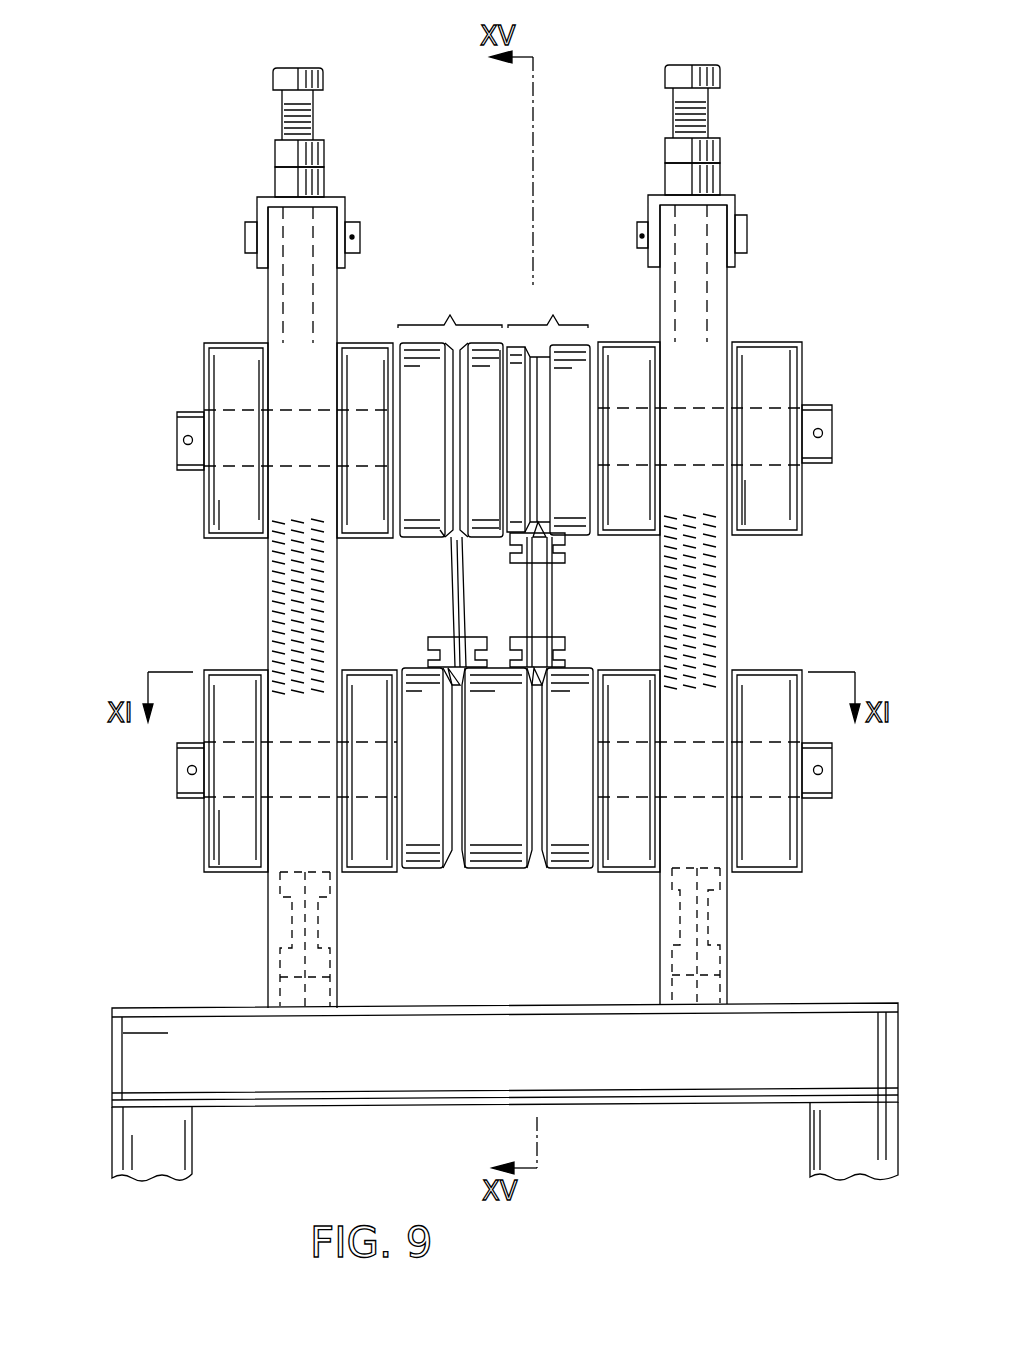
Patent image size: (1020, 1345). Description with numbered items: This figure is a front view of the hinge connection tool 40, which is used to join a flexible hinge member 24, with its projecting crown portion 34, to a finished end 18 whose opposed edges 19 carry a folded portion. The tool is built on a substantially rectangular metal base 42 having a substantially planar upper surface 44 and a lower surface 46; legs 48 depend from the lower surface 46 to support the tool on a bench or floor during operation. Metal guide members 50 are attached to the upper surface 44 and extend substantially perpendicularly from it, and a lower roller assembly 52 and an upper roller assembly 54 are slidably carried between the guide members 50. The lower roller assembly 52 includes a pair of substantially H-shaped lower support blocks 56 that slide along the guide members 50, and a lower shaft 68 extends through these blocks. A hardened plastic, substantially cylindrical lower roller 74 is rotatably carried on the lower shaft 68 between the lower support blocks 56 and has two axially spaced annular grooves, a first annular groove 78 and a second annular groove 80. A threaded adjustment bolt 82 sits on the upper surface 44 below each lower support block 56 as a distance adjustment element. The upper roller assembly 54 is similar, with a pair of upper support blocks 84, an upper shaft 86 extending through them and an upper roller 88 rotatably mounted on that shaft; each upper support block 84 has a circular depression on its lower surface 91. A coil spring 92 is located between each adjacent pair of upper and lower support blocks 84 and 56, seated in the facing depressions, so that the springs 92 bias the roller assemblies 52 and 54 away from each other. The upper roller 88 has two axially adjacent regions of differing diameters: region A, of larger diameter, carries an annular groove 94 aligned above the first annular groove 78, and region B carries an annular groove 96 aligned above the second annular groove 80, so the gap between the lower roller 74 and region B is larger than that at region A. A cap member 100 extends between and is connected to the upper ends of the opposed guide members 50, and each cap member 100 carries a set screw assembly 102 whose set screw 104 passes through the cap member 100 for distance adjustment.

The finished end 18 is at (522, 594).
The opposed edges 19 is at (442, 530).
The flexible hinge member 24 is at (514, 548).
The projecting crown portion 34 is at (544, 522).
The hinge connection tool 40 is at (768, 110).
The base 42 is at (112, 1041).
The upper surface 44 is at (482, 1005).
The lower surface 46 is at (276, 1107).
The legs 48 is at (112, 1134).
The guide members 50 is at (284, 901).
The lower roller assembly 52 is at (182, 812).
The upper roller assembly 54 is at (186, 391).
The lower support blocks 56 is at (210, 850).
The lower shaft 68 is at (832, 772).
The lower roller 74 is at (418, 868).
The first annular groove 78 is at (452, 868).
The second annular groove 80 is at (544, 868).
The threaded adjustment bolt 82 is at (294, 940).
The upper support blocks 84 is at (210, 508).
The upper shaft 86 is at (832, 432).
The upper roller 88 is at (485, 307).
The lower surface 91 is at (348, 538).
The coil spring 92 is at (266, 578).
The annular groove 94 is at (454, 410).
The annular groove 96 is at (538, 444).
The cap member 100 is at (256, 200).
The set screw assembly 102 is at (278, 70).
The set screw 104 is at (282, 116).